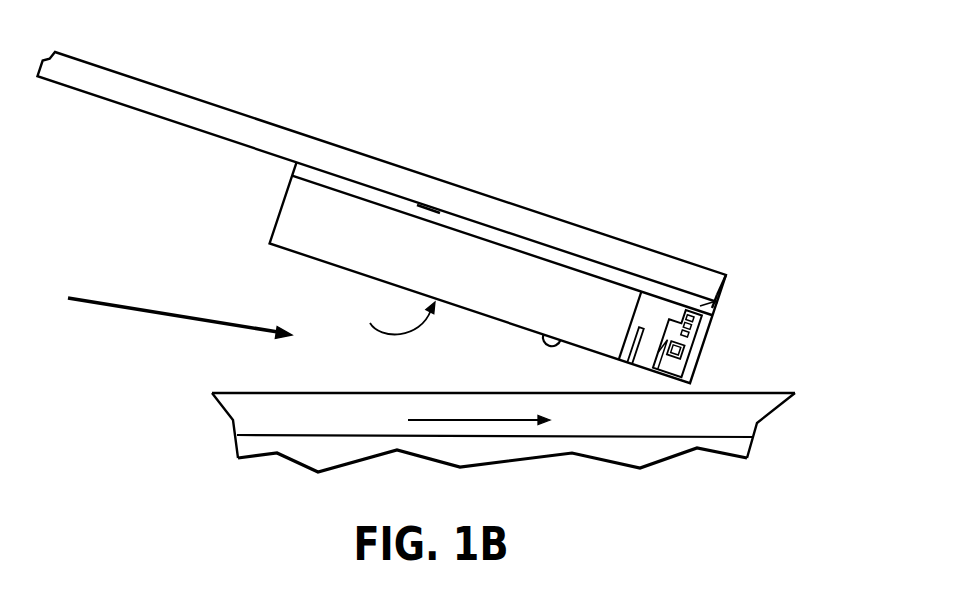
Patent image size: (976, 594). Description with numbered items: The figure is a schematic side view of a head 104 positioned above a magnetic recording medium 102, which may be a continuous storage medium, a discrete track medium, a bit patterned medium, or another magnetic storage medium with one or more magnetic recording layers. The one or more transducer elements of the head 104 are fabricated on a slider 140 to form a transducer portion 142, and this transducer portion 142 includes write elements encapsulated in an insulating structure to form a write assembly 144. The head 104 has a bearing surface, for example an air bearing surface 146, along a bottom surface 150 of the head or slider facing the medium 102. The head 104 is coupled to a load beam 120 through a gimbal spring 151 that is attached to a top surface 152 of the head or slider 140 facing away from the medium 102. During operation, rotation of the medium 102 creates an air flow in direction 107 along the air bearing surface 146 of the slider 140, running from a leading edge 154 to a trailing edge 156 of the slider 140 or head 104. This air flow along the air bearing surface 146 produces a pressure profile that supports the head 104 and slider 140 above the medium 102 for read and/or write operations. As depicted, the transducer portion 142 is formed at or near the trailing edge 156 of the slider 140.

The medium 102 is at (726, 423).
The head 104 is at (717, 268).
The air flow direction 107 is at (477, 420).
The load beam 120 is at (315, 150).
The slider 140 is at (466, 257).
The transducer portion 142 is at (716, 314).
The write assembly 144 is at (700, 308).
The air bearing surface 146 is at (383, 317).
The bottom surface 150 is at (561, 338).
The gimbal spring 151 is at (430, 208).
The top surface 152 is at (558, 255).
The leading edge 154 is at (282, 207).
The trailing edge 156 is at (705, 337).